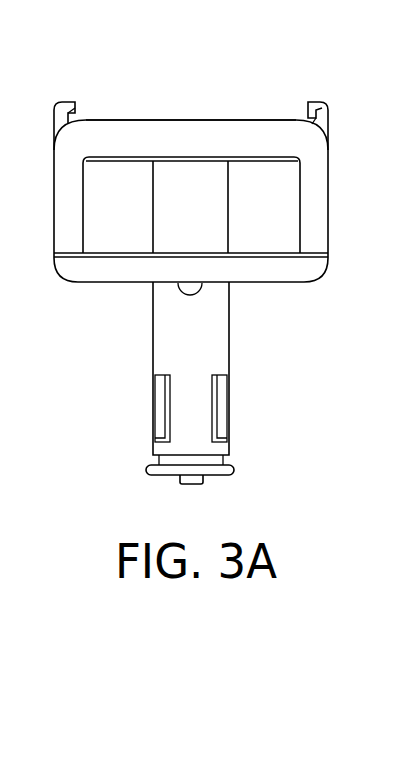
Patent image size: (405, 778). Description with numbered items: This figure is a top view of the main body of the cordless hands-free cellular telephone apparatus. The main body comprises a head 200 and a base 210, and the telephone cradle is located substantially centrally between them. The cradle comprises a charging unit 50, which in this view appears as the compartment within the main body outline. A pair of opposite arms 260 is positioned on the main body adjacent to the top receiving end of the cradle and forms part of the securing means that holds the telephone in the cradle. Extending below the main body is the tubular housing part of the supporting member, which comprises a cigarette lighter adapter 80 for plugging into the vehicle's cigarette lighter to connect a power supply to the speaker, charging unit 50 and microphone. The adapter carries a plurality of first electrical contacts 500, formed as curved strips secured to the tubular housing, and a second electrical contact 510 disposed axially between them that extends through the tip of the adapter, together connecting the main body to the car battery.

The head 200 is at (64, 281).
The base 210 is at (202, 127).
The pair of opposite arms 260 is at (327, 115).
The charging unit 50 is at (215, 195).
The first electrical contacts 500 is at (222, 408).
The cigarette lighter adapter 80 is at (148, 466).
The second electrical contact 510 is at (190, 485).